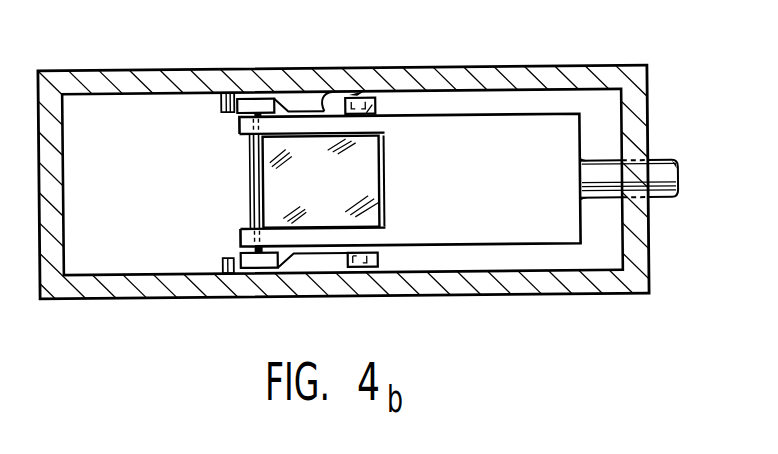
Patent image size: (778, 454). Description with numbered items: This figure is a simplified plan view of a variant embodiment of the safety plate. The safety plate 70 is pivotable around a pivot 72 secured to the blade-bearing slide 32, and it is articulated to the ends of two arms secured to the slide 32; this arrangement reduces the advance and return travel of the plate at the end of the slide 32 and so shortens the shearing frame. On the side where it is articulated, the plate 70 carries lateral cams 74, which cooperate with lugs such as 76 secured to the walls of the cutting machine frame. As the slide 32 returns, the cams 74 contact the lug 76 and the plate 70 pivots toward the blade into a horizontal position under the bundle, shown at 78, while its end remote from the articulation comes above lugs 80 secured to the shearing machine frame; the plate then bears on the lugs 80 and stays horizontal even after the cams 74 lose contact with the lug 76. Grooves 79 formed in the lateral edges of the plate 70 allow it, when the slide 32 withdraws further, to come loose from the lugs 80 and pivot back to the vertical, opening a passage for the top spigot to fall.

The slide 32 is at (468, 133).
The safety plate 70 is at (282, 92).
The pivot 72 is at (252, 209).
The lateral cams 74 is at (252, 98).
The lug 76 is at (224, 99).
The horizontal position of safety plate 78 is at (322, 193).
The grooves 79 is at (331, 92).
The lugs 80 is at (358, 93).